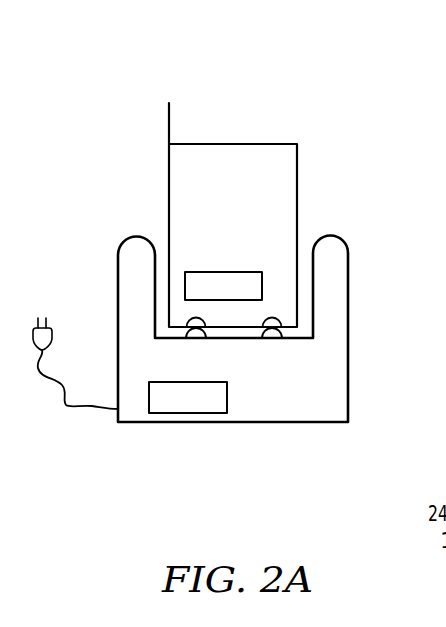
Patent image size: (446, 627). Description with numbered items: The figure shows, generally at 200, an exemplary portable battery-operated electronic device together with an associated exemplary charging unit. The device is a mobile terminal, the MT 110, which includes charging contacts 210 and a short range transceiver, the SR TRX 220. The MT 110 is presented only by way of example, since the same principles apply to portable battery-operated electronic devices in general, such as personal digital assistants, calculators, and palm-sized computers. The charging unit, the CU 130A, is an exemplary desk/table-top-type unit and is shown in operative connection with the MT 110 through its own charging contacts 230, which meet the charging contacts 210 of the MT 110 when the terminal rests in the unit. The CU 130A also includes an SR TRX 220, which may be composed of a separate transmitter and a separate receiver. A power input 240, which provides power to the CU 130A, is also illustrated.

The portable battery-operated electronic device and associated charging unit 200 is at (128, 103).
The MT 110 is at (169, 160).
The short range transceiver (SR TRX) 220 is at (198, 272).
The CU 130A is at (118, 285).
The charging contact(s) 210 is at (205, 317).
The charging contact(s) 230 is at (200, 340).
The power input 240 is at (118, 412).